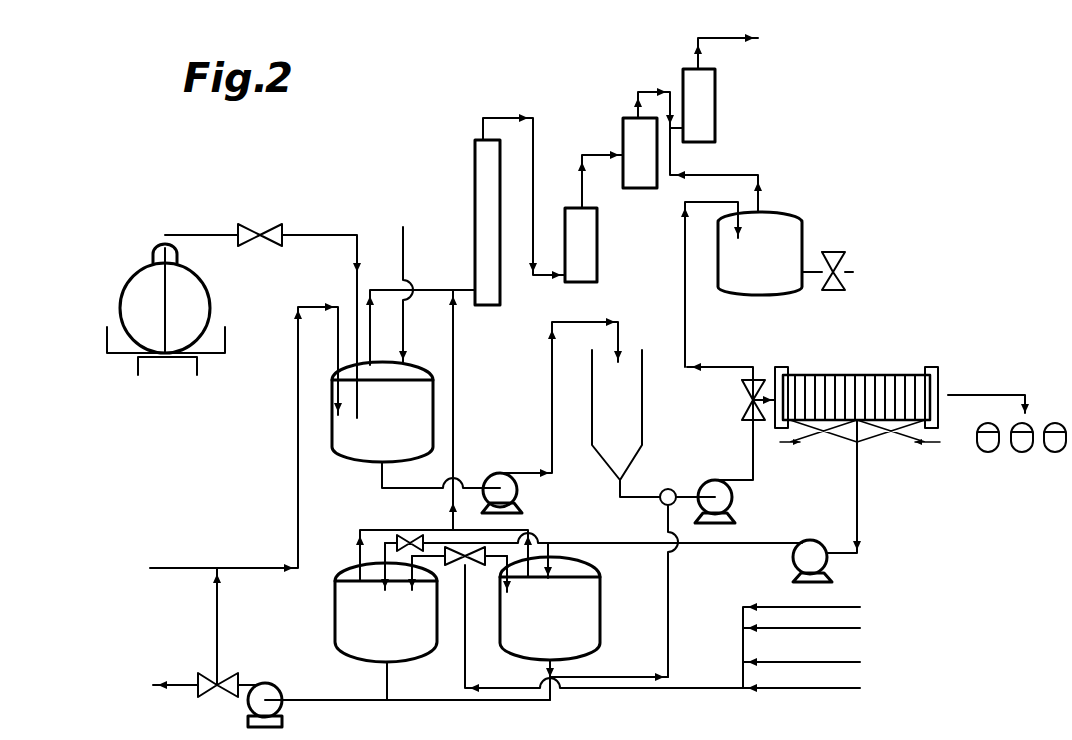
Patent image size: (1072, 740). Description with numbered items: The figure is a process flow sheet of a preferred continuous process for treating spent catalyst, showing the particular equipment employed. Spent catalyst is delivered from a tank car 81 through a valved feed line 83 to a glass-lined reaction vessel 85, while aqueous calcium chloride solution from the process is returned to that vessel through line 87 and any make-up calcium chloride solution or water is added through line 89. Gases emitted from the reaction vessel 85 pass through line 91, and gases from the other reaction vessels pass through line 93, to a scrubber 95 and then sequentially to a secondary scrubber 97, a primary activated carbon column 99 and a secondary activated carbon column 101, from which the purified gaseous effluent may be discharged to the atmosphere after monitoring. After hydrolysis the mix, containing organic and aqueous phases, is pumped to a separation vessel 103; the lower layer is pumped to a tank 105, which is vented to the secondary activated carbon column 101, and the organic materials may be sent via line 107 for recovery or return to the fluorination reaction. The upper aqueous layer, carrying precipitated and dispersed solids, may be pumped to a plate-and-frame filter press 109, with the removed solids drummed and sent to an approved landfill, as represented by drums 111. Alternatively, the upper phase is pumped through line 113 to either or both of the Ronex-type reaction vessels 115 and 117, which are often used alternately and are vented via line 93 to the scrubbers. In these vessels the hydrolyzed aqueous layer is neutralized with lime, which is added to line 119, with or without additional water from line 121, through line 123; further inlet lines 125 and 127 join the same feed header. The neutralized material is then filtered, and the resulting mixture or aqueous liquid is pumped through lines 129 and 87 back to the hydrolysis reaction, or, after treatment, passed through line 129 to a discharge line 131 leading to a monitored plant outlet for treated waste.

The tank car 81 is at (205, 282).
The gas feed line with valve 83 is at (298, 235).
The reaction vessel 85 is at (410, 363).
The line 87 is at (326, 307).
The line 89 is at (408, 256).
The line 91 is at (372, 346).
The line 93 is at (453, 398).
The scrubber 95 is at (475, 163).
The secondary scrubber 97 is at (597, 238).
The primary activated carbon column 99 is at (623, 130).
The secondary activated carbon column 101 is at (715, 93).
The separation vessel 103 is at (642, 418).
The tank 105 is at (800, 216).
The line 107 is at (845, 272).
The plate-and-frame filter press 109 is at (883, 375).
The drums 111 is at (985, 452).
The line 113 is at (568, 543).
The Ronex-type reaction vessel 115 is at (335, 622).
The Ronex-type reaction vessel 117 is at (600, 618).
The line 119 is at (858, 628).
The line 121 is at (858, 607).
The line 123 is at (465, 665).
The inlet line 125 is at (858, 662).
The inlet line 127 is at (858, 688).
The line 129 is at (316, 700).
The discharge line 131 is at (182, 686).